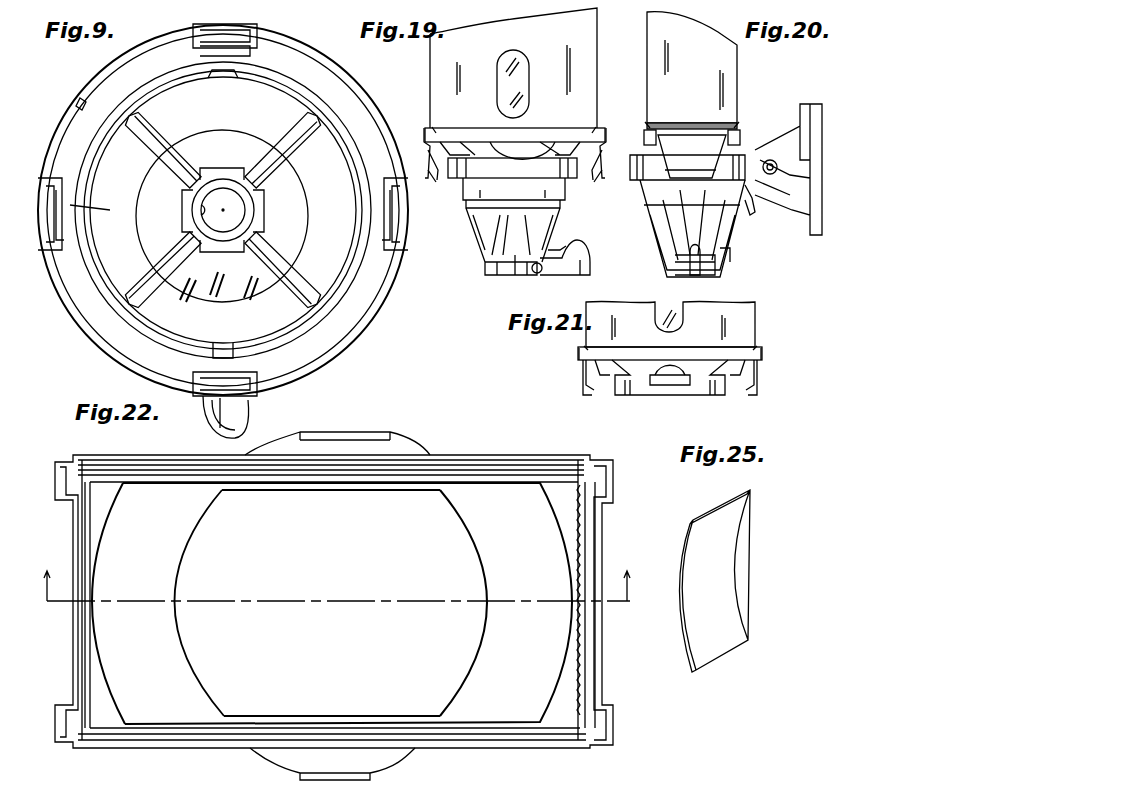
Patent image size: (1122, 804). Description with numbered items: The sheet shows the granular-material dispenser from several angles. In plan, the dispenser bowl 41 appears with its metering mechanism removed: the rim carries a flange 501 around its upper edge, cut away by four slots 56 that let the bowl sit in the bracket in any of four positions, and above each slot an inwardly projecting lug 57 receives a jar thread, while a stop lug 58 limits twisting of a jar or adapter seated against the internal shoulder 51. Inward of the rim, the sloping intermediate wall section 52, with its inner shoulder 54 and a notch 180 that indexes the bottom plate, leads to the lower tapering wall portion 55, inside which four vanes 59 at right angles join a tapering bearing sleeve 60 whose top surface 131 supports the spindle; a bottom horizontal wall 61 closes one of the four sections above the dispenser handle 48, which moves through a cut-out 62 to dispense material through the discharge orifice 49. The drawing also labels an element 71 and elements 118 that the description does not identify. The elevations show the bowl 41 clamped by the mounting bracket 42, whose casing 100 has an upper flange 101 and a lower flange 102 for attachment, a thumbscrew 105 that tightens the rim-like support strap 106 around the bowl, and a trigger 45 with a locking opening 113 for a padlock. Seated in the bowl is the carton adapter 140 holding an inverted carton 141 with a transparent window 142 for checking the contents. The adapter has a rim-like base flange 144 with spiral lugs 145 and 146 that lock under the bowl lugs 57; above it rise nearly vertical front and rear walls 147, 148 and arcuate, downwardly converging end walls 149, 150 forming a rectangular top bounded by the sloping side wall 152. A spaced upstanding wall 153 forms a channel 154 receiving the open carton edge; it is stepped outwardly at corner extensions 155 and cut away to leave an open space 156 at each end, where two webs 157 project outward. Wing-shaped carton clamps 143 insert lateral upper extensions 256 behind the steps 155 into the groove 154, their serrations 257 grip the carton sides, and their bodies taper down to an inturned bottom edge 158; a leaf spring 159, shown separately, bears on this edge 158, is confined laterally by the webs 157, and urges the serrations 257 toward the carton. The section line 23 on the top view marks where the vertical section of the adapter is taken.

In FIG. 22, the section line 23 is at (337, 599).
In FIG. 9, the dispenser bowl 41 is at (88, 359).
In FIG. 19, the dispenser bowl 41 is at (482, 263).
In FIG. 20, the mounting bracket 42 is at (812, 88).
In FIG. 20, the trigger 45 is at (752, 212).
In FIG. 9, the dispenser handle 48 is at (242, 406).
In FIG. 19, the dispenser handle 48 is at (554, 272).
In FIG. 20, the dispenser handle 48 is at (702, 275).
In FIG. 9, the discharge orifice 49 is at (152, 222).
In FIG. 9, the internal shoulder 51 is at (320, 65).
In FIG. 9, the sloping intermediate wall section 52 is at (370, 305).
In FIG. 19, the sloping intermediate wall section 52 is at (482, 203).
In FIG. 20, the sloping intermediate wall section 52 is at (692, 210).
In FIG. 9, the inner shoulder 54 is at (324, 128).
In FIG. 9, the lower tapering wall portion 55 is at (320, 320).
In FIG. 19, the lower tapering wall portion 55 is at (510, 262).
In FIG. 20, the lower tapering wall portion 55 is at (724, 258).
In FIG. 9, the slots 56 is at (187, 38).
In FIG. 9, the inwardly projecting lug 57 is at (207, 36).
In FIG. 9, the positioning lug 58 is at (80, 100).
In FIG. 9, the vanes 59 is at (274, 158).
In FIG. 9, the bearing sleeve 60 is at (260, 210).
In FIG. 9, the bottom horizontal wall 61 is at (215, 296).
In FIG. 19, the bottom horizontal wall 61 is at (590, 260).
In FIG. 20, the bottom horizontal wall 61 is at (724, 250).
In FIG. 19, the cut out 62 is at (537, 275).
In FIG. 20, the cut out 62 is at (712, 265).
In FIG. 9, the tab 71 is at (234, 72).
In FIG. 20, the casing 100 is at (800, 135).
In FIG. 20, the upper flange 101 is at (804, 112).
In FIG. 20, the lower flange 102 is at (814, 236).
In FIG. 20, the thumbscrew 105 is at (778, 167).
In FIG. 19, the rim-like support strap 106 is at (512, 150).
In FIG. 20, the rim-like support strap 106 is at (657, 180).
In FIG. 20, the locking opening 113 is at (762, 200).
In FIG. 9, the knob 118 is at (227, 28).
In FIG. 9, the bearing surface 131 is at (205, 208).
In FIG. 19, the carton adapter 140 is at (414, 130).
In FIG. 21, the carton adapter 140 is at (628, 404).
In FIG. 22, the carton adapter 140 is at (460, 441).
In FIG. 19, the carton 141 is at (592, 44).
In FIG. 20, the carton 141 is at (740, 76).
In FIG. 21, the carton 141 is at (744, 320).
In FIG. 19, the transparent window 142 is at (524, 72).
In FIG. 21, the transparent window 142 is at (664, 304).
In FIG. 19, the carton clamp 143 is at (452, 150).
In FIG. 20, the carton clamp 143 is at (692, 114).
In FIG. 21, the carton clamp 143 is at (584, 378).
In FIG. 22, the carton clamp 143 is at (610, 570).
In FIG. 21, the rim-like base flange 144 is at (702, 395).
In FIG. 22, the rim-like base flange 144 is at (302, 432).
In FIG. 22, the lug 145 is at (362, 432).
In FIG. 21, the lug 146 is at (670, 385).
In FIG. 22, the lug 146 is at (340, 778).
In FIG. 22, the front wall 147 is at (344, 716).
In FIG. 22, the rear wall 148 is at (348, 484).
In FIG. 22, the end wall 149 is at (112, 566).
In FIG. 20, the end wall 150 is at (708, 143).
In FIG. 22, the end wall 150 is at (562, 632).
In FIG. 22, the side wall 152 is at (542, 470).
In FIG. 19, the upstanding wall 153 is at (532, 136).
In FIG. 21, the upstanding wall 153 is at (692, 352).
In FIG. 22, the upstanding wall 153 is at (427, 458).
In FIG. 22, the channel 154 is at (77, 462).
In FIG. 19, the corner step 155 is at (424, 128).
In FIG. 20, the corner step 155 is at (730, 136).
In FIG. 21, the corner step 155 is at (580, 355).
In FIG. 22, the corner step 155 is at (94, 500).
In FIG. 22, the open space 156 is at (64, 502).
In FIG. 19, the webs 157 is at (582, 152).
In FIG. 21, the webs 157 is at (592, 368).
In FIG. 19, the inturned bottom edge 158 is at (438, 178).
In FIG. 20, the inturned bottom edge 158 is at (667, 215).
In FIG. 21, the inturned bottom edge 158 is at (590, 395).
In FIG. 19, the leaf spring 159 is at (454, 170).
In FIG. 21, the leaf spring 159 is at (588, 380).
In FIG. 25, the leaf spring 159 is at (722, 580).
In FIG. 9, the notch 180 is at (234, 350).
In FIG. 20, the lateral upper extensions 256 is at (654, 122).
In FIG. 19, the serrations 257 is at (432, 126).
In FIG. 21, the serrations 257 is at (590, 347).
In FIG. 22, the serrations 257 is at (580, 580).
In FIG. 9, the flange 501 is at (370, 286).